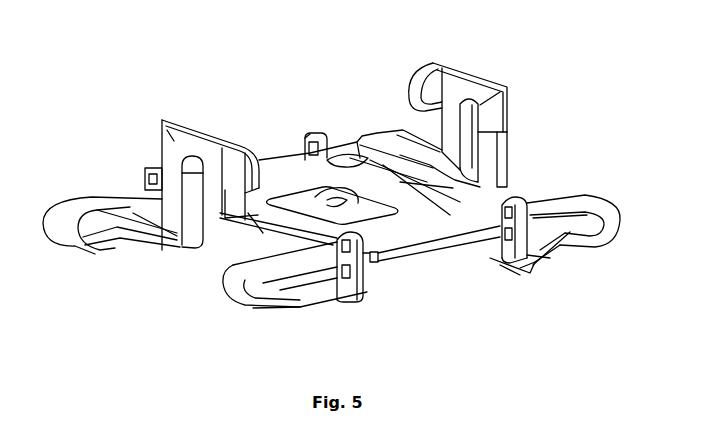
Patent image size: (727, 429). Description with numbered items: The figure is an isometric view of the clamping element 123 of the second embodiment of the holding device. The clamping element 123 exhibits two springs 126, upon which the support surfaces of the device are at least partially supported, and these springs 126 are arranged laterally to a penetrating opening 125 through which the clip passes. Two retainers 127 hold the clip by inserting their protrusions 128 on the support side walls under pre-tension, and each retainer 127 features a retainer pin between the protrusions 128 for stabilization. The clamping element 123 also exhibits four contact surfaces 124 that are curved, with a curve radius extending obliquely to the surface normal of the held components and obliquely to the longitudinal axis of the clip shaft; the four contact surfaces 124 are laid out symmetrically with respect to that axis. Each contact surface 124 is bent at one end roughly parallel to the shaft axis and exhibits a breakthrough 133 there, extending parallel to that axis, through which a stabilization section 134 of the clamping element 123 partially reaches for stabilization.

The clamping element 123 is at (540, 67).
The contact surfaces 124 is at (325, 195).
The penetrating opening 125 is at (338, 208).
The springs 126 is at (495, 176).
The retainers 127 is at (160, 120).
The protrusions 128 is at (238, 147).
The breakthrough 133 is at (302, 283).
The stabilization section 134 is at (369, 269).